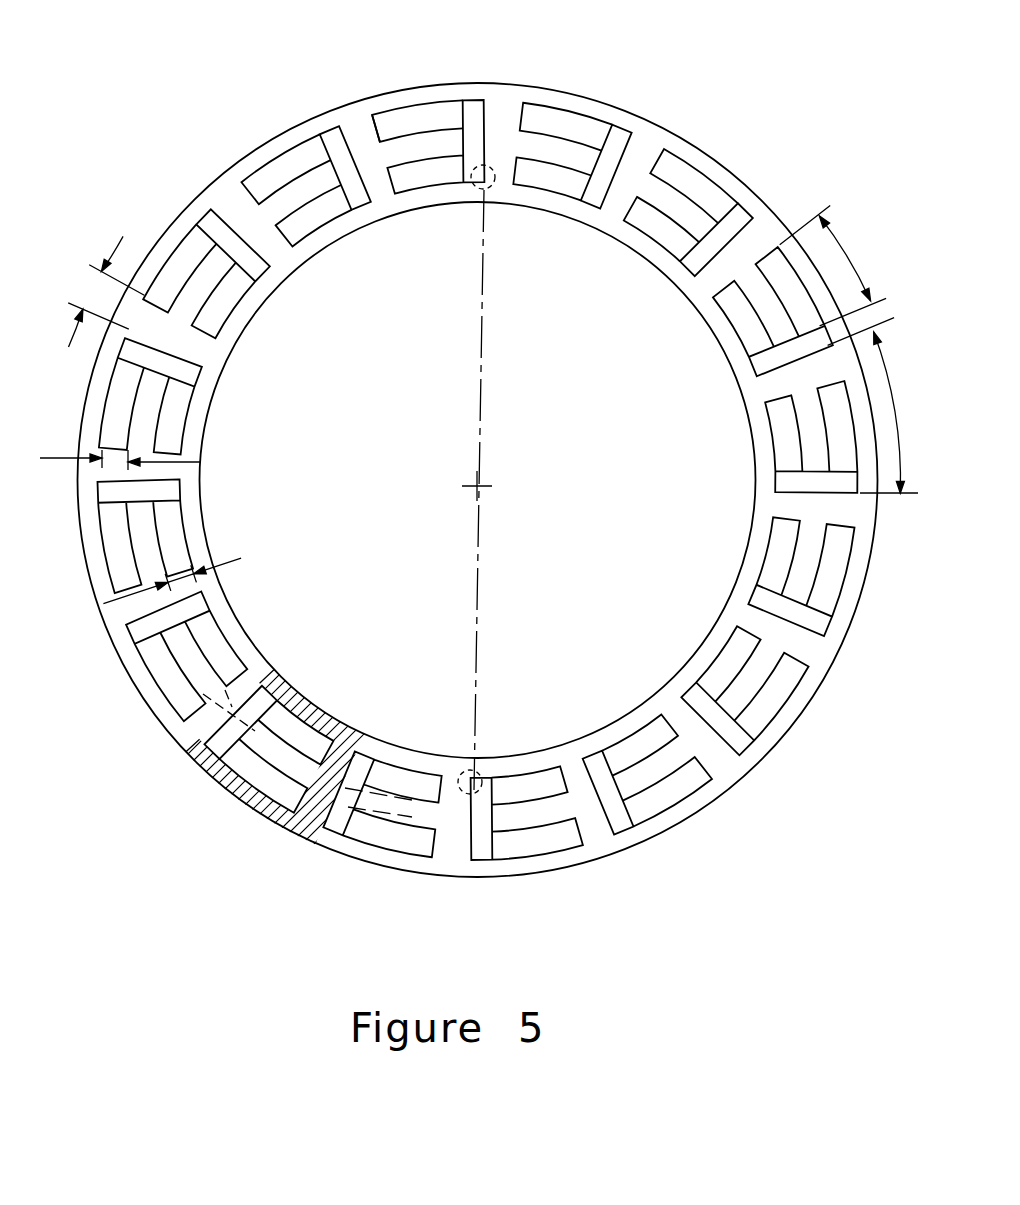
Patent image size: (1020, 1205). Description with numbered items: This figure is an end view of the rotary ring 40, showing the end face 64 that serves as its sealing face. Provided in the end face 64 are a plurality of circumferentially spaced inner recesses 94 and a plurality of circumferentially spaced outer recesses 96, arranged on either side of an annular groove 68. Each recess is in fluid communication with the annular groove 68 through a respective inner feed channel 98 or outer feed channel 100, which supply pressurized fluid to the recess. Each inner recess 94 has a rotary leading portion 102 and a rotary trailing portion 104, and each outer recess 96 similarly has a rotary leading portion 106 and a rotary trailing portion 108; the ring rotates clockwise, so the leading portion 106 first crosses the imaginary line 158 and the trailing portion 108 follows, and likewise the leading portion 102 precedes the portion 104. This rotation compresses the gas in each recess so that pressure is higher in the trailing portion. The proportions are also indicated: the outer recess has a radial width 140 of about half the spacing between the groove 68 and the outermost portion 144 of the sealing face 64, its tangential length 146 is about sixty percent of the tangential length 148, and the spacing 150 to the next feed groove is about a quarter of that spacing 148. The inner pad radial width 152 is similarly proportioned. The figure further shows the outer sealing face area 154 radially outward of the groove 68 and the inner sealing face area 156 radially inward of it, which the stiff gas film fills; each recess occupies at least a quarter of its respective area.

The rotary ring 40 is at (288, 322).
The end face 64 is at (775, 510).
The annular groove 68 is at (223, 693).
The inner recess 94 is at (567, 185).
The outer recess 96 is at (563, 122).
The inner feed channel 98 is at (697, 258).
The outer feed channel 100 is at (732, 217).
The rotary leading portion 102 is at (333, 207).
The rotary trailing portion 104 is at (293, 228).
The rotary leading portion 106 is at (429, 122).
The rotary trailing portion 108 is at (385, 125).
The radial width 140 is at (145, 467).
The outermost portion 144 is at (150, 718).
The tangential length 146 is at (833, 265).
The tangential length 148 is at (874, 406).
The spacing 150 is at (106, 291).
The inner pad radial width 152 is at (197, 578).
The outer sealing face area 154 is at (205, 525).
The inner sealing face area 156 is at (337, 731).
The imaginary line 158 is at (480, 383).